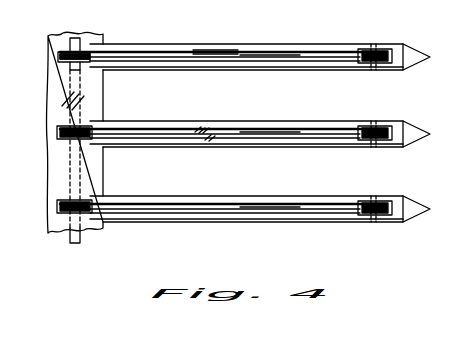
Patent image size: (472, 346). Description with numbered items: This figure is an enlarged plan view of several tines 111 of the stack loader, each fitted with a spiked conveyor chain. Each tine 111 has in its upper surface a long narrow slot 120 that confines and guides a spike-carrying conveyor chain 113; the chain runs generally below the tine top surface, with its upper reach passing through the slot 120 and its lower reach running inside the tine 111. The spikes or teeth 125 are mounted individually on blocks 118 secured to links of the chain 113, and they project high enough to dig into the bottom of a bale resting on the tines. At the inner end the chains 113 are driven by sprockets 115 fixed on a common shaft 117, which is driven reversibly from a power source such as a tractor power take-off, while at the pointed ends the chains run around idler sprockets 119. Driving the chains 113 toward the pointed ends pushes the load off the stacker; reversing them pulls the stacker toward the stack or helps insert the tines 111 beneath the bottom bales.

The tine 111 is at (395, 121).
The conveyor chain 113 is at (293, 121).
The sprocket 115 is at (95, 49).
The shaft 117 is at (88, 72).
The block 118 is at (260, 60).
The idler sprocket 119 is at (362, 121).
The slot 120 is at (260, 53).
The tooth 125 is at (238, 52).